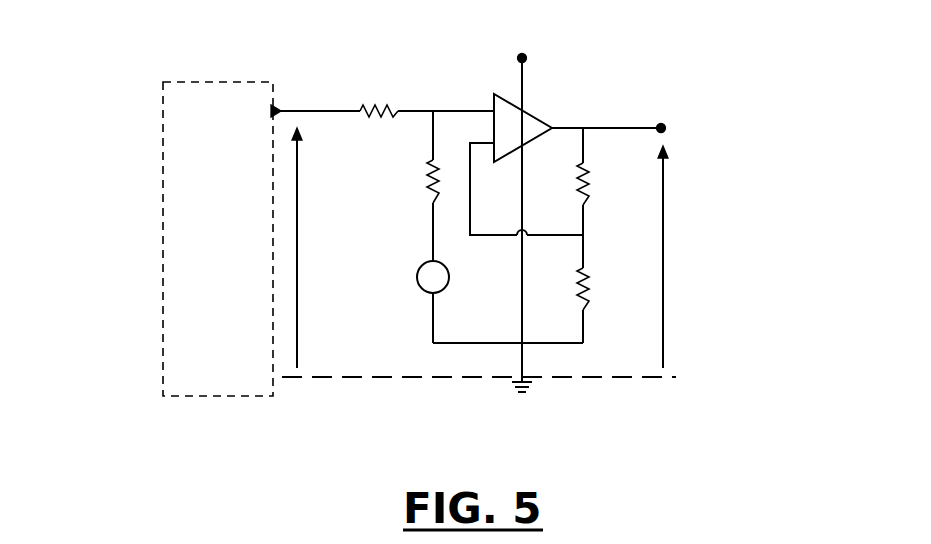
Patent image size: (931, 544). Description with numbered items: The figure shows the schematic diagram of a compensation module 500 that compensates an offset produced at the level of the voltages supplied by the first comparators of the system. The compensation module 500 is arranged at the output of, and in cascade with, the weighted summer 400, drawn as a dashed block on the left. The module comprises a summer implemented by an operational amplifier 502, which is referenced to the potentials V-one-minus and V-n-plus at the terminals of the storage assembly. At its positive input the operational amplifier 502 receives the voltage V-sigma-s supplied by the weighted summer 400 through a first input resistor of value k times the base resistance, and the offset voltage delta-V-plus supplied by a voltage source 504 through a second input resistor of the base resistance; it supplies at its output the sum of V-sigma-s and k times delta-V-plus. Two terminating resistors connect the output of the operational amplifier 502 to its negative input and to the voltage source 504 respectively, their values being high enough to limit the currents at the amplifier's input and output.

The weighted summer 400 is at (163, 120).
The compensation module 500 is at (539, 230).
The operational amplifier 502 is at (537, 120).
The voltage source 504 is at (420, 289).